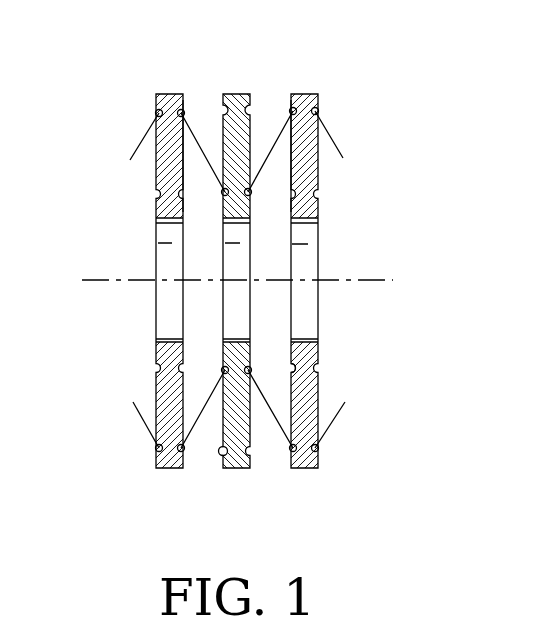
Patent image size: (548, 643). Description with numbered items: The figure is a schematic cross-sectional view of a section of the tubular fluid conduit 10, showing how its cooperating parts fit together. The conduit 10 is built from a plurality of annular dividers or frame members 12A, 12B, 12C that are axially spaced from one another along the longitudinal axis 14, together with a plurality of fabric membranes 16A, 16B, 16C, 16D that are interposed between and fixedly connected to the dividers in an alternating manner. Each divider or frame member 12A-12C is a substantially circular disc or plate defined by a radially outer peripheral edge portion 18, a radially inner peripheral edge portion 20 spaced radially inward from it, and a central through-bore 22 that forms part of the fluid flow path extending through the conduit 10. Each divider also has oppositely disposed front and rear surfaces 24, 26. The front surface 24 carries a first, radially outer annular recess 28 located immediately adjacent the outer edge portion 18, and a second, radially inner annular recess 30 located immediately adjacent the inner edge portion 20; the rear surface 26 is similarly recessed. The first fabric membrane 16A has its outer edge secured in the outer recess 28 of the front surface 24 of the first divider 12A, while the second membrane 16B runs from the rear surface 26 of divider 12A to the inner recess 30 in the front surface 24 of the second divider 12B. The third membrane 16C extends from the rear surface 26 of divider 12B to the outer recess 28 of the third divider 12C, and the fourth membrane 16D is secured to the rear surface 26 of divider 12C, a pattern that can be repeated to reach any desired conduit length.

The tubular fluid conduit 10 is at (373, 118).
The first annular divider or frame member 12A is at (133, 281).
The second annular divider or frame member 12B is at (216, 327).
The third annular divider or frame member 12C is at (349, 281).
The longitudinal axis 14 is at (88, 282).
The first fabric membrane 16A is at (146, 423).
The second fabric membrane 16B is at (202, 148).
The third fabric membrane 16C is at (275, 412).
The fourth fabric membrane 16D is at (335, 427).
The radially outer peripheral edge portion 18 is at (233, 93).
The radially inner peripheral edge portion 20 is at (305, 340).
The central through-bore 22 is at (167, 298).
The front surface or side 24 is at (291, 164).
The rear surface or side 26 is at (183, 172).
The first, radially outer annular recess 28 is at (224, 451).
The second, radially inner annular recess 30 is at (300, 368).